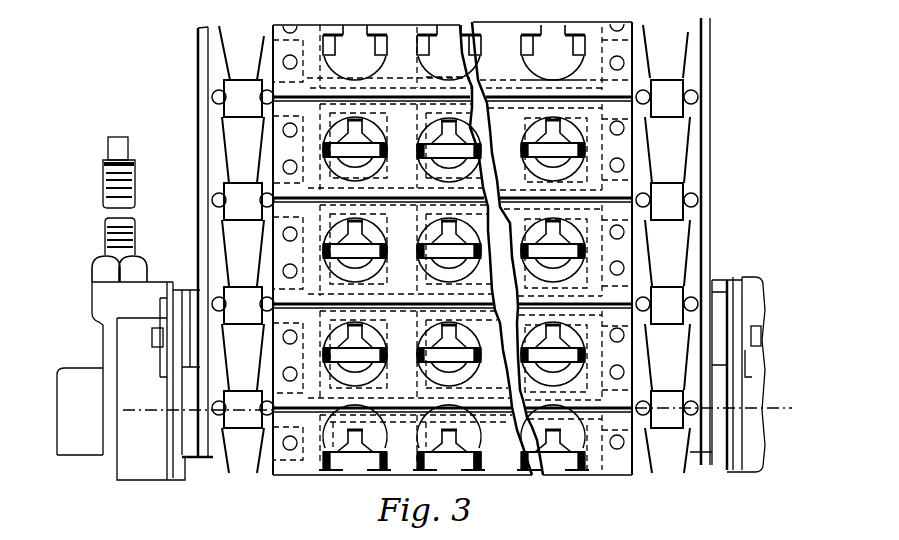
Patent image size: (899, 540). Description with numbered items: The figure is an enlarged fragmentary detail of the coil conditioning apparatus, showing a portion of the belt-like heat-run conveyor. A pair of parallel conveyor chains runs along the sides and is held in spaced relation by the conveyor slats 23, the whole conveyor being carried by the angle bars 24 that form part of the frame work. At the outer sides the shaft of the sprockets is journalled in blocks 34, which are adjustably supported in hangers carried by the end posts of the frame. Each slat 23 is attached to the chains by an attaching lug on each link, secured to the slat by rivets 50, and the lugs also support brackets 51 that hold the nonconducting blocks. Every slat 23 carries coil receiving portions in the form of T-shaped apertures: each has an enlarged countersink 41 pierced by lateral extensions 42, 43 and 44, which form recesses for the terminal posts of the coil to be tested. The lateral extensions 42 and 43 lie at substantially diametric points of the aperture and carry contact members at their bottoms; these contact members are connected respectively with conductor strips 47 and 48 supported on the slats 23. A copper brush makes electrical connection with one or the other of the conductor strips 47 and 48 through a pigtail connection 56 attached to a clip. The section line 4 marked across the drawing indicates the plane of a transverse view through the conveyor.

The section line 4- 4 is at (787, 424).
The conveyor slats 23 is at (419, 37).
The angle bars 24 is at (200, 143).
The blocks 34 is at (71, 374).
The countersink 41 is at (367, 178).
The lateral extension 42 is at (438, 459).
The lateral extension 43 is at (483, 459).
The lateral extension 44 is at (456, 441).
The conductor strip 47 is at (335, 318).
The conductor strip 48 is at (320, 410).
The rivets 50 is at (283, 337).
The brackets 51 is at (314, 292).
The pigtail connection 56 is at (593, 455).